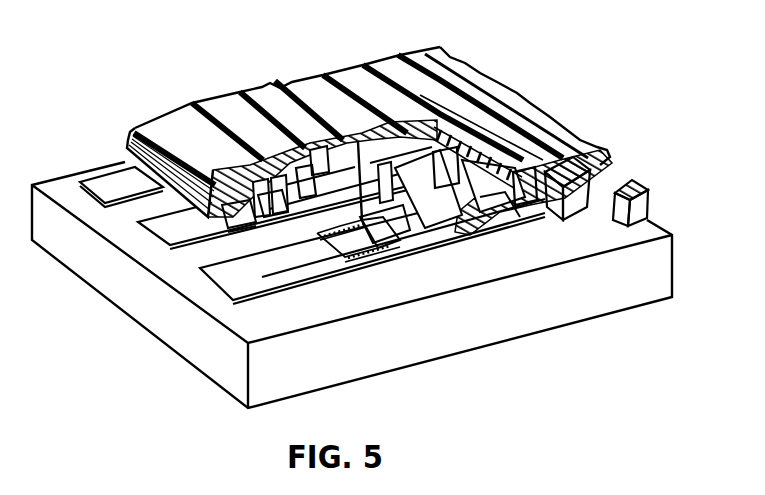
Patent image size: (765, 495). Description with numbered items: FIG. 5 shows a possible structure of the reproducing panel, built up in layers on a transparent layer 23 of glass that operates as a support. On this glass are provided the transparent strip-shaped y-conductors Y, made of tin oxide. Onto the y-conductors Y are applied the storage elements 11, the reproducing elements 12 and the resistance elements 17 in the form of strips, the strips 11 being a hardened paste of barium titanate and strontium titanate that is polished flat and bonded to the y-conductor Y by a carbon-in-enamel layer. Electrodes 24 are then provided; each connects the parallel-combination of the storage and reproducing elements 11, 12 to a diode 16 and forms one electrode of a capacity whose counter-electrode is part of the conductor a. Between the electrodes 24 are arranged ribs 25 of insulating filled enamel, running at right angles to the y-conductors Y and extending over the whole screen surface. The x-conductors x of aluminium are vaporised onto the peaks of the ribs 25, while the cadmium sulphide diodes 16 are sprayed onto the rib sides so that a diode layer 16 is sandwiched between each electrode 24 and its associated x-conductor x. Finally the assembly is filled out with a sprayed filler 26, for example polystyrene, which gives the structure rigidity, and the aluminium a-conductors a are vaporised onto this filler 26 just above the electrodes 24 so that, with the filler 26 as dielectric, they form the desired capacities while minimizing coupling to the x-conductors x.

The transparent layer 23 is at (272, 377).
The electrodes 24 is at (243, 222).
The ribs 25 is at (533, 222).
The filler 26 is at (163, 120).
The storage elements 11 is at (272, 212).
The reproducing elements 12 is at (362, 248).
The diodes 16 is at (306, 198).
The resistance elements 17 is at (338, 258).
The a-conductor a is at (198, 101).
The x-conductor x is at (350, 207).
The y-conductor Y is at (117, 193).